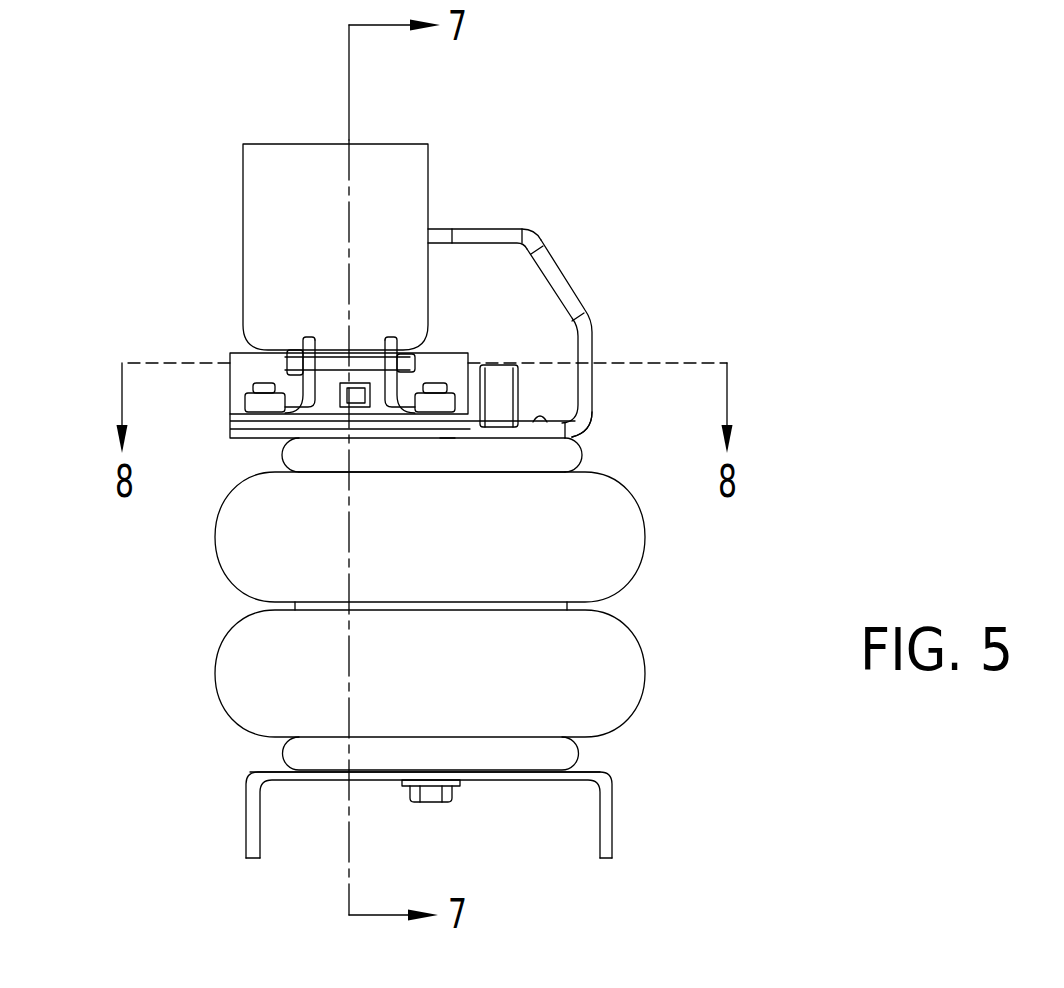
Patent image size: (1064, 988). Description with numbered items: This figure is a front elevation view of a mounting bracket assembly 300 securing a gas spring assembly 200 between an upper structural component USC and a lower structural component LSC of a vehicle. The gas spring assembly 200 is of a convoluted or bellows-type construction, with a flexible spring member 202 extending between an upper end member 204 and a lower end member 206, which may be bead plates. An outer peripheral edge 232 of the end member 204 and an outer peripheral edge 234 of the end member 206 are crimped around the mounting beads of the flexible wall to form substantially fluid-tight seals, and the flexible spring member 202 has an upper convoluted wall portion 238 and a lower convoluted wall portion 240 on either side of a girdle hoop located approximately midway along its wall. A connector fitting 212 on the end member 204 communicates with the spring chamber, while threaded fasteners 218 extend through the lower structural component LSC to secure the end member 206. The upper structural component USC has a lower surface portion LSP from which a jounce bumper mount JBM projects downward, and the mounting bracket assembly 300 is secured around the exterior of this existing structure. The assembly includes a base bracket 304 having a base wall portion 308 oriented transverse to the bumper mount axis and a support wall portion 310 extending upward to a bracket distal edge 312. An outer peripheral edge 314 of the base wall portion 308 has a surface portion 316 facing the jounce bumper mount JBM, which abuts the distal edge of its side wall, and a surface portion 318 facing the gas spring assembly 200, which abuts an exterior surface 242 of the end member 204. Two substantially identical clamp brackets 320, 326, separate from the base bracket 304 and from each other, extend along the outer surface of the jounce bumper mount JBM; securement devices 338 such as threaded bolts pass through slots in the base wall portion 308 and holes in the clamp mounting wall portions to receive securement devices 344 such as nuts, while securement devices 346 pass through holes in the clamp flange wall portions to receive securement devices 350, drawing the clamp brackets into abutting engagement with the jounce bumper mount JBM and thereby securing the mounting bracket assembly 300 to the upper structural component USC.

The upper structural component USC is at (418, 184).
The lower structural component LSC is at (233, 818).
The lower surface portion LSP is at (277, 352).
The jounce bumper mount JBM is at (323, 420).
The gas spring assembly 200 is at (448, 597).
The flexible spring member 202 is at (420, 584).
The end member 204 is at (598, 445).
The end member 206 is at (600, 764).
The connector fitting 212 is at (520, 380).
The threaded fastener 218 is at (430, 803).
The outer peripheral edge 232 is at (585, 462).
The outer peripheral edge 234 is at (577, 743).
The convoluted wall portion 238 is at (645, 565).
The convoluted wall portion 240 is at (645, 660).
The exterior surface 242 is at (337, 432).
The mounting bracket assembly 300 is at (580, 294).
The base bracket 304 is at (616, 412).
The base wall portion 308 is at (517, 428).
The support wall portion 310 is at (560, 282).
The bracket distal edge 312 is at (458, 229).
The outer peripheral edge 314 is at (232, 432).
The surface portion 316 is at (542, 424).
The surface portion 318 is at (447, 430).
The clamp bracket 320 is at (412, 375).
The clamp bracket 326 is at (292, 380).
The securement device 338 is at (172, 365).
The securement device 344 is at (255, 400).
The securement device 346 is at (251, 255).
The securement device 350 is at (295, 362).